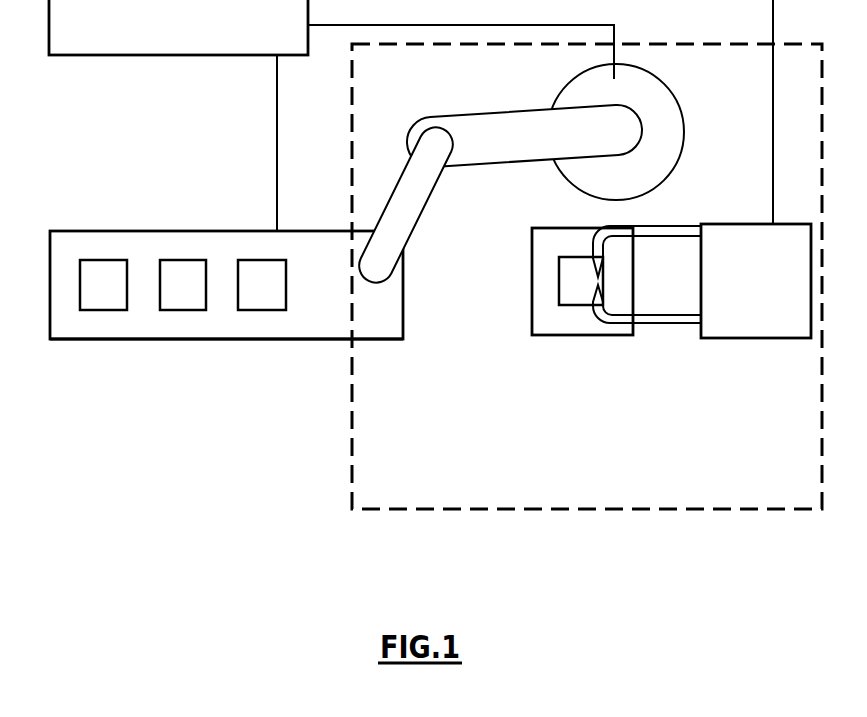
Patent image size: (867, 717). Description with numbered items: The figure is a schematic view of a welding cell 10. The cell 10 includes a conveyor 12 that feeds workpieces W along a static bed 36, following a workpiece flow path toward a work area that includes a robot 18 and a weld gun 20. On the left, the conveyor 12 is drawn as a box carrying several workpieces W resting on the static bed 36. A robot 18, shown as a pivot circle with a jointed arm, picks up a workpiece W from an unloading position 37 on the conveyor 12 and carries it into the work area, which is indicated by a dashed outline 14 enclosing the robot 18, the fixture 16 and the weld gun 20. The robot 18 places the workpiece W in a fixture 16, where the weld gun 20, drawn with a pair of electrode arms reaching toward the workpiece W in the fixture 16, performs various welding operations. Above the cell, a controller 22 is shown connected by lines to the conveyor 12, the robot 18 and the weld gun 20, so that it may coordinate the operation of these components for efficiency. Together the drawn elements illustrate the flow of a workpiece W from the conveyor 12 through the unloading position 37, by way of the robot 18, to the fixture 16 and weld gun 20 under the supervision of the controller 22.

The welding cell 10 is at (273, 399).
The conveyor 12 is at (157, 230).
The robot cell enclosure 14 is at (420, 509).
The fixture 16 is at (585, 336).
The robot 18 is at (665, 112).
The weld gun 20 is at (737, 317).
The controller 22 is at (135, 57).
The static bed 36 is at (198, 327).
The unloading position 37 is at (373, 299).
The workpiece W is at (167, 288).